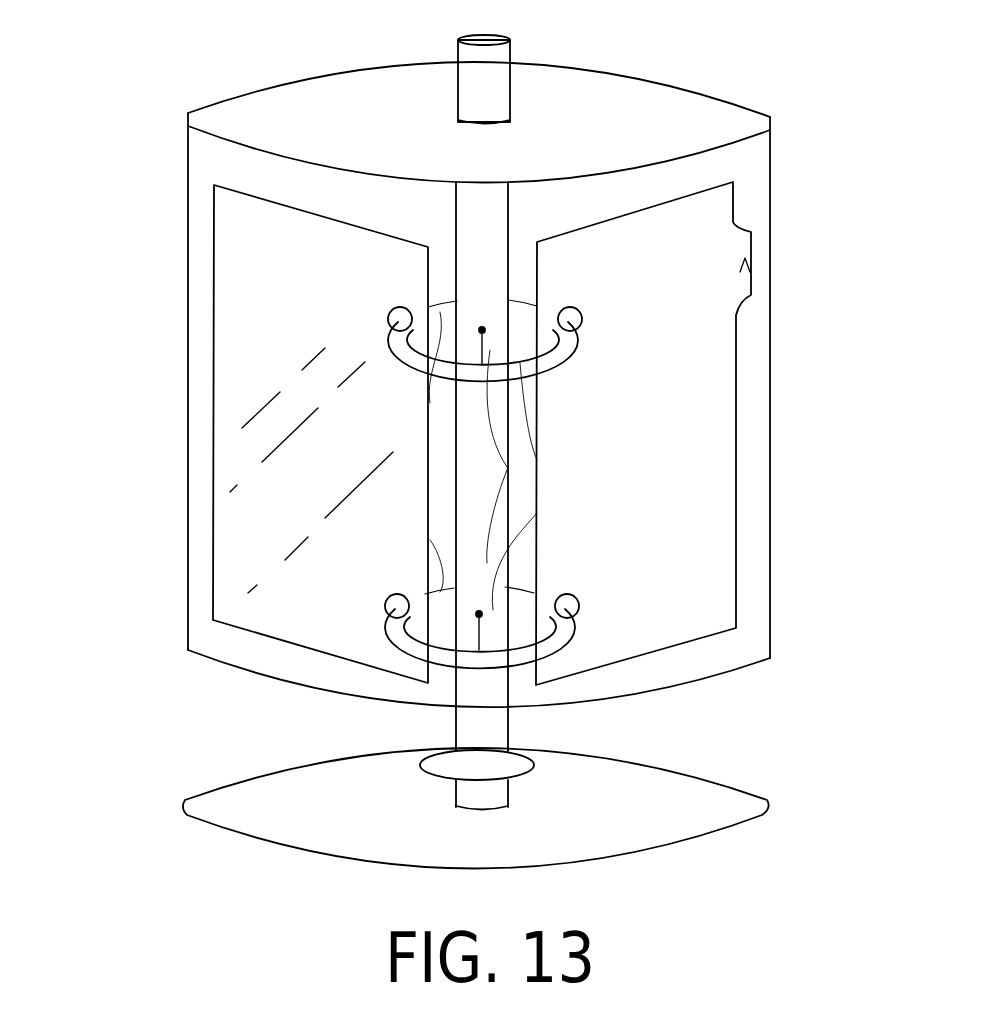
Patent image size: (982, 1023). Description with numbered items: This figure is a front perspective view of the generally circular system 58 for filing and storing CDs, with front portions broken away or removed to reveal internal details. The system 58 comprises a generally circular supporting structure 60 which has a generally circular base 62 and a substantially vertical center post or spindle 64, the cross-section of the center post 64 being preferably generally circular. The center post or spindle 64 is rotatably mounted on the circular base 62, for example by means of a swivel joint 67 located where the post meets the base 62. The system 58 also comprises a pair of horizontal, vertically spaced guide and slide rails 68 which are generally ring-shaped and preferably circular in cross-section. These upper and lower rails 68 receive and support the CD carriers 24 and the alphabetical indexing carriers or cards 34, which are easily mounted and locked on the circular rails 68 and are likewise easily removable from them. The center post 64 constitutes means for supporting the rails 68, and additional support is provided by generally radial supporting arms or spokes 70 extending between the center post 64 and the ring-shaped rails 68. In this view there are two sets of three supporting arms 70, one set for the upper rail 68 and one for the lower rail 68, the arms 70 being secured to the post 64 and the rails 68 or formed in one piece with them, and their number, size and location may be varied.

The circular system 58 is at (258, 68).
The supporting structure 60 is at (700, 85).
The CD carrier 24 is at (258, 314).
The alphabetical indexing carrier 34 is at (707, 430).
The center post 64 is at (516, 52).
The swivel joint 67 is at (548, 748).
The guide and slide rails 68 is at (576, 358).
The supporting arms 70 is at (430, 405).
The base 62 is at (700, 808).